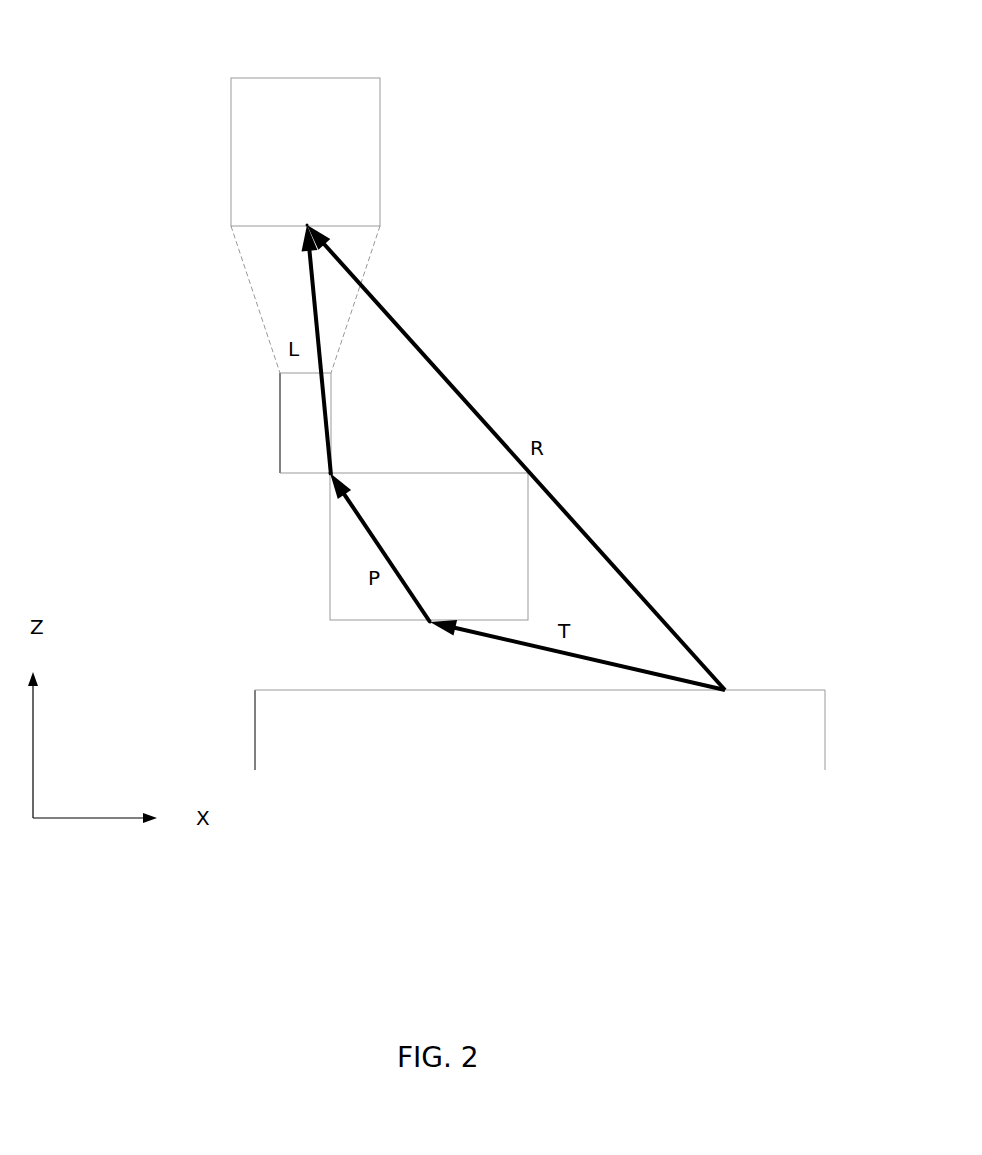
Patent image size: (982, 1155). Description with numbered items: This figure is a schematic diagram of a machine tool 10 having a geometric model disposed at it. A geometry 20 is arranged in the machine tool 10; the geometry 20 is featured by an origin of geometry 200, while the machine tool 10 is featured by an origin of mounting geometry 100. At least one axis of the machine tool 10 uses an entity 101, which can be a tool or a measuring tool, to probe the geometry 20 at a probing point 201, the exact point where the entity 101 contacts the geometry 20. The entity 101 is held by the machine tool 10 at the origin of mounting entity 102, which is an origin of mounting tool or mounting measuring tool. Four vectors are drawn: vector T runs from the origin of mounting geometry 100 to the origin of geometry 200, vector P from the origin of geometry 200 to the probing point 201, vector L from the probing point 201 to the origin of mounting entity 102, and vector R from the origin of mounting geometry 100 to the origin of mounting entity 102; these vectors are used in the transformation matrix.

The machine tool 10 is at (380, 123).
The origin of mounting entity 102 is at (307, 225).
The entity 101 is at (280, 422).
The geometry 20 is at (410, 473).
The probing point 201 is at (330, 473).
The origin of geometry 200 is at (430, 623).
The origin of mounting geometry 100 is at (723, 680).